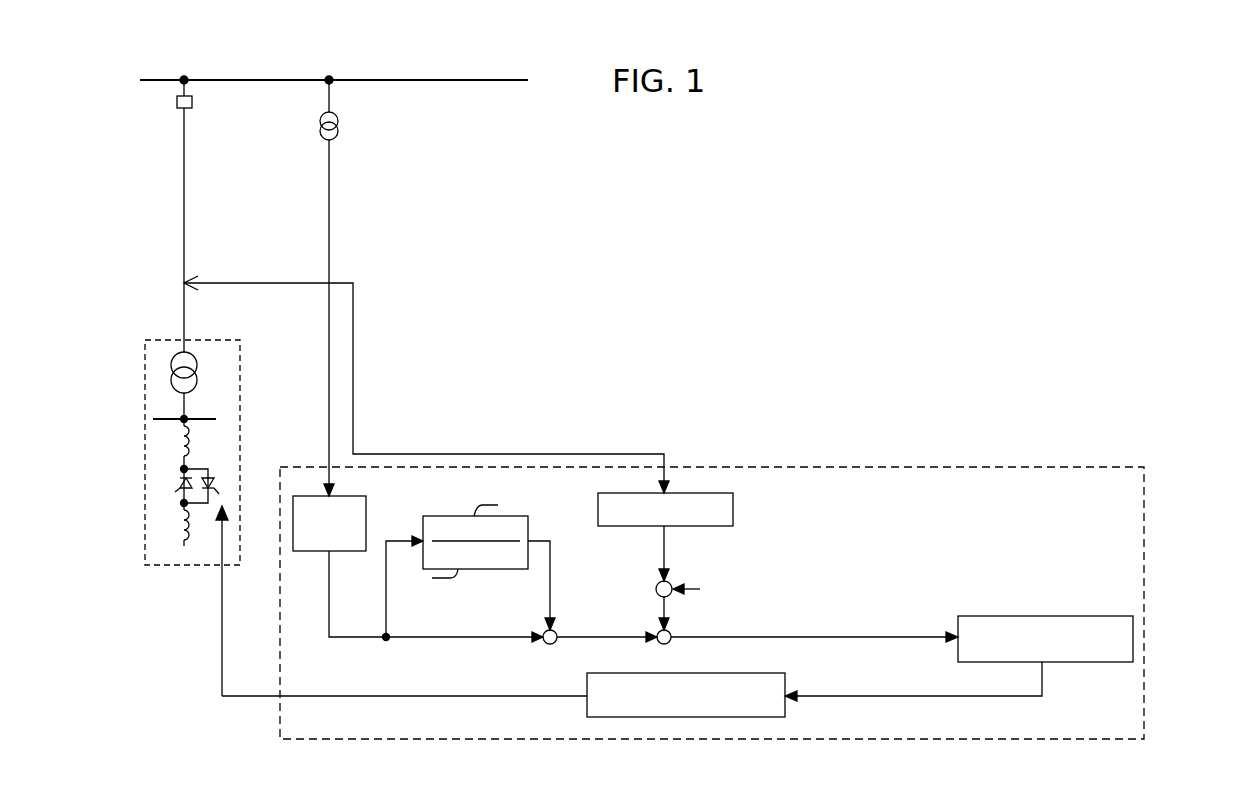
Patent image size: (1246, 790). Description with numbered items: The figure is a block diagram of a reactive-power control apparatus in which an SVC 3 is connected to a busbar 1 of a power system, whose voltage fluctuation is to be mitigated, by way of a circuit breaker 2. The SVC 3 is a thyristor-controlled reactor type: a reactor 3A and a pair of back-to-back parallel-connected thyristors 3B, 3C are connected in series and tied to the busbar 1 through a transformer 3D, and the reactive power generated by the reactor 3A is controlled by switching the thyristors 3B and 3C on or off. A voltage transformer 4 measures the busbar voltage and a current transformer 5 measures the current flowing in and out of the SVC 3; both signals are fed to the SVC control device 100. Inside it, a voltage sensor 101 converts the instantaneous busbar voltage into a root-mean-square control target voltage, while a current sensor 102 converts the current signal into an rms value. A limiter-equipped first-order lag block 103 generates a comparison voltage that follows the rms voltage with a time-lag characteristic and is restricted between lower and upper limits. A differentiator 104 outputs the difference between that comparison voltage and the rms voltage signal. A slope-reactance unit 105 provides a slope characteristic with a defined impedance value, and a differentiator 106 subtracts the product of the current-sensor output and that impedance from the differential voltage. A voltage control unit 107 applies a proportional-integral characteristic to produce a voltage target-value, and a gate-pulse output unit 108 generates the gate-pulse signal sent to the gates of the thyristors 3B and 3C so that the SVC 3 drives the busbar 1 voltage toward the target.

The busbar 1 is at (383, 80).
The circuit breaker 2 is at (192, 102).
The SVC 3 is at (162, 340).
The reactor 3A is at (178, 522).
The thyristor 3B is at (178, 458).
The thyristor 3C is at (212, 476).
The transformer 3D is at (172, 382).
The voltage transformer 4 is at (338, 131).
The current transformer 5 is at (190, 280).
The SVC control device 100 is at (1144, 567).
The voltage sensor 101 is at (366, 510).
The current sensor 102 is at (733, 514).
The limiter-equipped first-order lag block 103 is at (528, 518).
The differentiator 104 is at (556, 630).
The slope-reactance unit 105 is at (670, 582).
The differentiator 106 is at (670, 632).
The voltage control unit 107 is at (1045, 616).
The gate-pulse output unit 108 is at (740, 673).